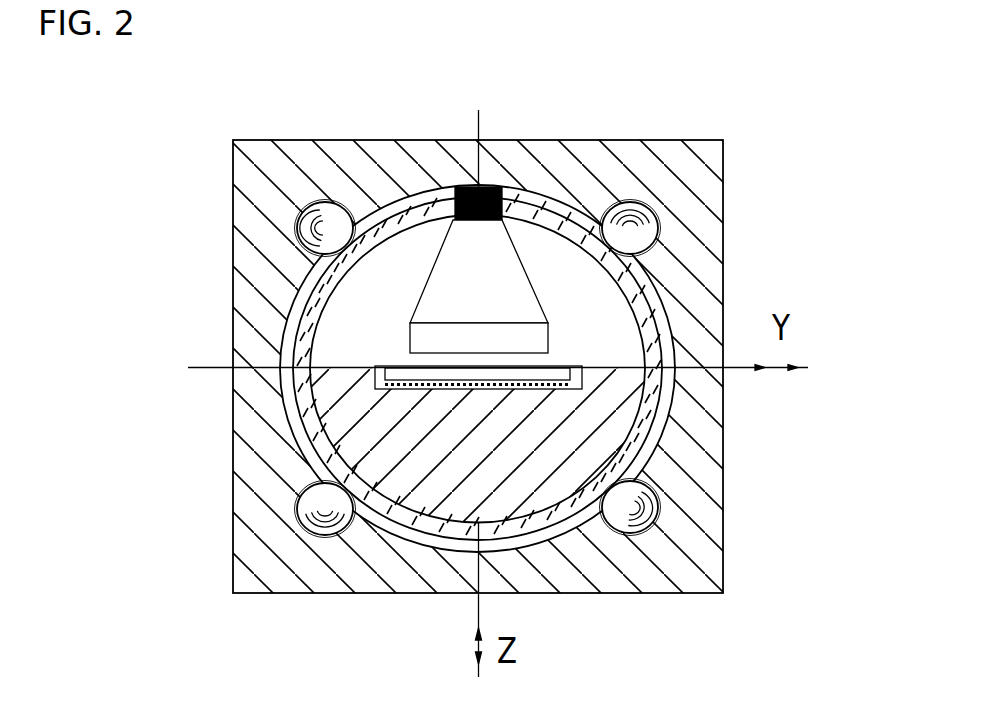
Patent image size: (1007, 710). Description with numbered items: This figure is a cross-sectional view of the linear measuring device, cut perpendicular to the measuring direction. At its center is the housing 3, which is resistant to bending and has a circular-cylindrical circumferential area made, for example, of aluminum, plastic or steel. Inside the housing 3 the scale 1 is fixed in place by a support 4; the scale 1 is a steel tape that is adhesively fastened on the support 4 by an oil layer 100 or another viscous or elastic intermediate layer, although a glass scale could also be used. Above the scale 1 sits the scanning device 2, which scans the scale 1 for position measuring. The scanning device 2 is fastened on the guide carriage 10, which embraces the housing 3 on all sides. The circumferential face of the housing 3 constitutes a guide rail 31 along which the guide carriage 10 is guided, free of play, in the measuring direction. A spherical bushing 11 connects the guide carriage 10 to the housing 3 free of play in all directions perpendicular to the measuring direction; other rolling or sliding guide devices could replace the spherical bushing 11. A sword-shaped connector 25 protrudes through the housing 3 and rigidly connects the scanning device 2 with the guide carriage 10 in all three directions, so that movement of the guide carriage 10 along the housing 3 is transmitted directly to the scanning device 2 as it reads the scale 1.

The scale 1 is at (552, 372).
The scanning device 2 is at (420, 335).
The housing 3 is at (645, 265).
The support 4 is at (587, 447).
The guide carriage 10 is at (687, 557).
The spherical bushing 11 is at (622, 512).
The sword-shaped connector 25 is at (480, 187).
The guide rail 31 is at (575, 217).
The oil layer 100 is at (617, 383).